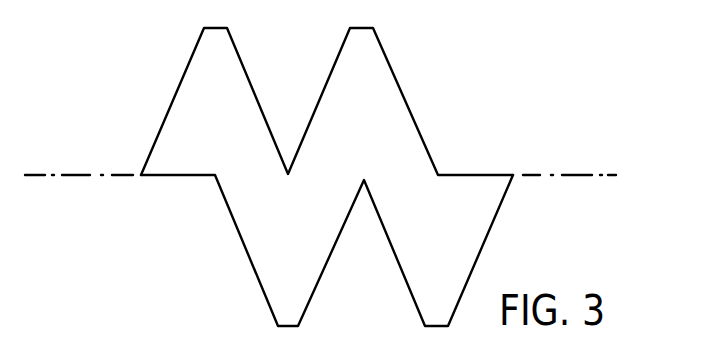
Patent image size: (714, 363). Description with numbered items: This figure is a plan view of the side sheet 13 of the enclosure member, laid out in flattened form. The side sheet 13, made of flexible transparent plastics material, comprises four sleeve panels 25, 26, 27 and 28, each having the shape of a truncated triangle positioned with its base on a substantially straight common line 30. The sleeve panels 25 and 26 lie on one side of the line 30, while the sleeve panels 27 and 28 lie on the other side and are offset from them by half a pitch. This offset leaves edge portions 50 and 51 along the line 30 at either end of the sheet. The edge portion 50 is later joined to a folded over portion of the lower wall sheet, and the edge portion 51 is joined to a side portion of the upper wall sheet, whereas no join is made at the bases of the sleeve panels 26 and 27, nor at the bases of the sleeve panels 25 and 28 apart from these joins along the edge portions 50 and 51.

The side sheet 13 is at (160, 109).
The sleeve panel 25 is at (194, 62).
The sleeve panel 26 is at (340, 62).
The sleeve panel 27 is at (263, 275).
The sleeve panel 28 is at (418, 275).
The common line 30 is at (577, 175).
The edge portion 50 is at (184, 178).
The edge portion 51 is at (486, 175).